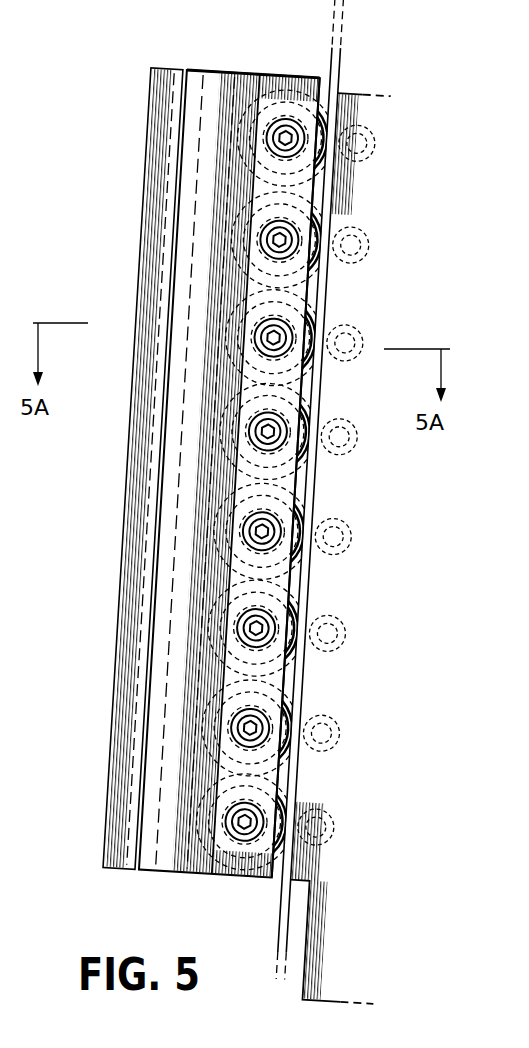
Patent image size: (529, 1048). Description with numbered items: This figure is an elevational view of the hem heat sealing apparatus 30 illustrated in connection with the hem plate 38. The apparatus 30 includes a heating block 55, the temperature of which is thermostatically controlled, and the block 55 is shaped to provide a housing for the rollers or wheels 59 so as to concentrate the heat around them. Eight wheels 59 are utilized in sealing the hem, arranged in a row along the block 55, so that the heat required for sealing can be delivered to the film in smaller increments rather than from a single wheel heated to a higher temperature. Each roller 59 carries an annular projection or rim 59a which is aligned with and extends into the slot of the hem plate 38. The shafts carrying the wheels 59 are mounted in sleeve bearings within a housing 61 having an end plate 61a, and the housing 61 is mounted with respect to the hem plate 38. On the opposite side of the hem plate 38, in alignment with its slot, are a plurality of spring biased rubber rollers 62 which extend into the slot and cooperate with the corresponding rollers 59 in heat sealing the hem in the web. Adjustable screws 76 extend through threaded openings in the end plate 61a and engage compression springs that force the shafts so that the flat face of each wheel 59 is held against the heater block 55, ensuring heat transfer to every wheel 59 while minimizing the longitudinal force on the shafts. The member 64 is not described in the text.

The heat sealing apparatus 30 is at (211, 373).
The hem plate 38 is at (278, 884).
The heating block 55 is at (202, 92).
The roller 59 is at (290, 105).
The annular projection 59a is at (327, 775).
The housing 61 is at (150, 803).
The end plate 61a is at (217, 868).
The rubber roller 62 is at (375, 140).
The channel member 64 is at (402, 552).
The adjustable screw 76 is at (262, 240).